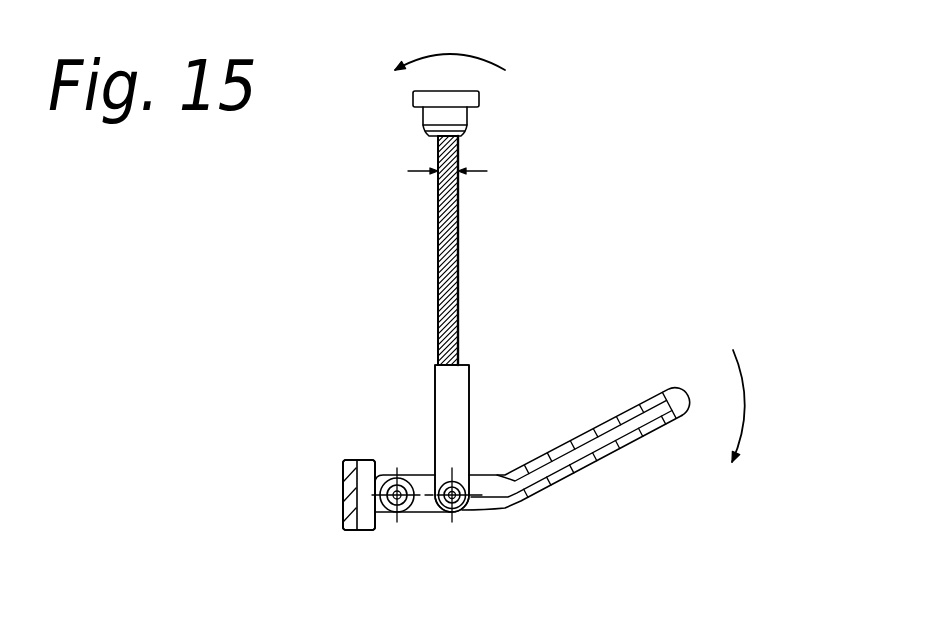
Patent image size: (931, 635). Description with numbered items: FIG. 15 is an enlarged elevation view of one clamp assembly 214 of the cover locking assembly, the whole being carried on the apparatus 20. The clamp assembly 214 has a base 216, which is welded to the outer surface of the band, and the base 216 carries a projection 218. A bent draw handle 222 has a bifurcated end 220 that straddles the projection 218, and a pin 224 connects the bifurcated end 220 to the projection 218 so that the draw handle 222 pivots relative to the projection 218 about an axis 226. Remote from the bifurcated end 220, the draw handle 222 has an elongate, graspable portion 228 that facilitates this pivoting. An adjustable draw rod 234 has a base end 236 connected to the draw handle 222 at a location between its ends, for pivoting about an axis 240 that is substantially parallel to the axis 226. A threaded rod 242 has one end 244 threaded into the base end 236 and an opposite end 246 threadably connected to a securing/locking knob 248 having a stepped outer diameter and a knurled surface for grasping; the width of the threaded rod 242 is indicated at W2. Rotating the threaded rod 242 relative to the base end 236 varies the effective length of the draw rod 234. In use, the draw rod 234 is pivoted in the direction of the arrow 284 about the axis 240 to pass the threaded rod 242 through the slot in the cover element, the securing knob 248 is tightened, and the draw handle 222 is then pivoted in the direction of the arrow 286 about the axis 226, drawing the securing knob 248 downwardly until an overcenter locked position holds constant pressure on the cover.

The apparatus frame 20 is at (343, 478).
The clamp assembly 214 is at (487, 351).
The base 216 is at (364, 460).
The projection 218 is at (372, 529).
The bifurcated end 220 is at (422, 477).
The draw handle 222 is at (526, 500).
The pin 224 is at (406, 511).
The axis 226 is at (389, 513).
The graspable portion 228 is at (620, 410).
The adjustable draw rod 234 is at (467, 272).
The base end 236 is at (470, 397).
The axis 240 is at (466, 513).
The threaded rod 242 is at (458, 200).
The end 244 is at (459, 362).
The opposite end 246 is at (458, 147).
The securing/locking knob 248 is at (467, 90).
The arrow 284 is at (465, 53).
The arrow 286 is at (743, 373).
The shaft width W2 is at (425, 171).